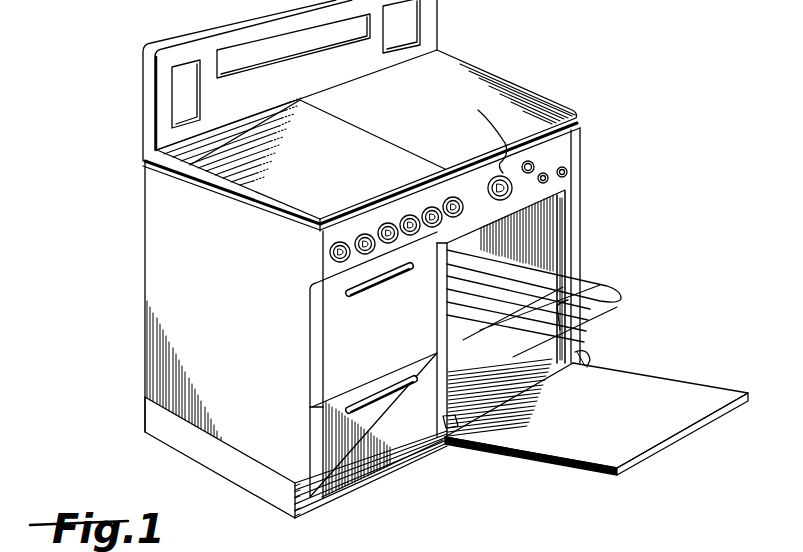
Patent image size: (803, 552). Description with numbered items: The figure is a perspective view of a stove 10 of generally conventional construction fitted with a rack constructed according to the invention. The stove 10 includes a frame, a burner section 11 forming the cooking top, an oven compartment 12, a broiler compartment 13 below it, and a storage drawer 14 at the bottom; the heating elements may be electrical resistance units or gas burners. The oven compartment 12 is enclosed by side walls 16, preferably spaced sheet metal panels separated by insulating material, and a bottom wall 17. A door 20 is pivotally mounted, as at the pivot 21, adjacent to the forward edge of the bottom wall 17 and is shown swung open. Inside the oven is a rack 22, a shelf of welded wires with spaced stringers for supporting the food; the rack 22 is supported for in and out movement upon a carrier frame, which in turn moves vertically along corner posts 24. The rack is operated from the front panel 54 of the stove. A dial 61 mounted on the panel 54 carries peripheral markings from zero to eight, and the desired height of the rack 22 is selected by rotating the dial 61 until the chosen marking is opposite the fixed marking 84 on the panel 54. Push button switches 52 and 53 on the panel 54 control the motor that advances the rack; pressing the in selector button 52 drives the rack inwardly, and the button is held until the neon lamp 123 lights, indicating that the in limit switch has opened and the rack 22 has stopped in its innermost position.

The stove 10 is at (577, 207).
The burner section 11 is at (308, 191).
The oven compartment 12 is at (540, 240).
The broiler compartment 13 is at (357, 328).
The storage drawer 14 is at (355, 450).
The side walls 16 is at (168, 317).
The bottom wall 17 is at (528, 381).
The door 20 is at (658, 386).
The pivot 21 is at (443, 440).
The rack 22 is at (609, 293).
The corner posts 24 is at (572, 330).
The in selector button 52 is at (547, 172).
The push button switch 53 is at (570, 173).
The front panel 54 is at (467, 187).
The dial 61 is at (497, 198).
The marking 84 is at (485, 134).
The neon lamp 123 is at (535, 163).